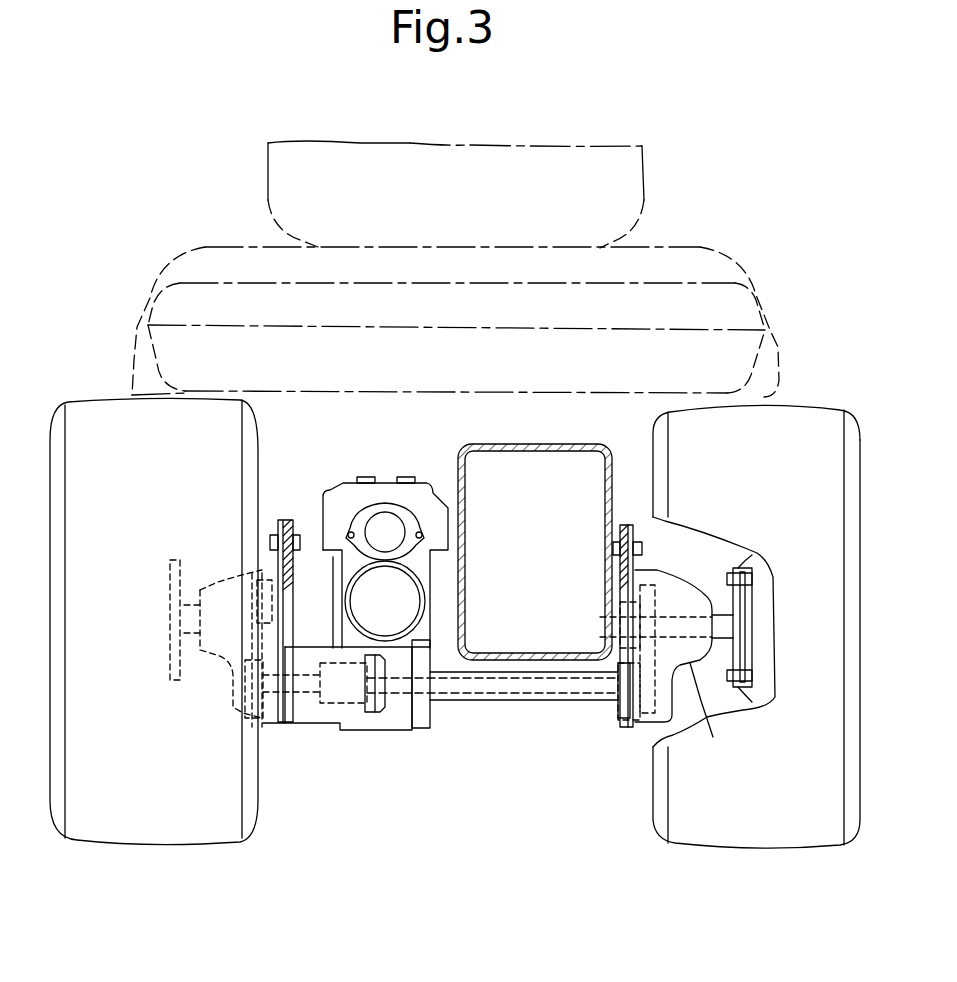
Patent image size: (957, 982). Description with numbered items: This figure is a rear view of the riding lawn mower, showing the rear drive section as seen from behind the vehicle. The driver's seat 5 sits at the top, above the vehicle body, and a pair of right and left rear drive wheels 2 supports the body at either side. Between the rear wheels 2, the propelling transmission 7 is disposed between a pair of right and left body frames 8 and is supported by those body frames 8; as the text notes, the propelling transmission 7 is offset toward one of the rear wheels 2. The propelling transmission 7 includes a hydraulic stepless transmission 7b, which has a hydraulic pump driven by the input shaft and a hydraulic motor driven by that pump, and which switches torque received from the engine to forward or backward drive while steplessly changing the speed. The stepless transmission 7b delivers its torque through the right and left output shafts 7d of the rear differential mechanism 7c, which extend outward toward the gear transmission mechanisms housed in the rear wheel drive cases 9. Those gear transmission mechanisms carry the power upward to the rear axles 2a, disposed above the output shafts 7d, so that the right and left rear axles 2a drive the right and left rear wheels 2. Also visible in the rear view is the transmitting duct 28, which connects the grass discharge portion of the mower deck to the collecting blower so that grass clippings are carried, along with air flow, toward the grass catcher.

The rear drive wheels 2 is at (258, 793).
The rear axles 2a is at (222, 612).
The driver's seat 5 is at (268, 190).
The propelling transmission 7 is at (432, 636).
The hydraulic stepless transmission 7b is at (332, 502).
The rear differential mechanism 7c is at (385, 703).
The output shafts 7d is at (302, 693).
The body frames 8 is at (291, 520).
The rear wheel drive cases 9 is at (225, 658).
The transmitting duct 28 is at (460, 470).